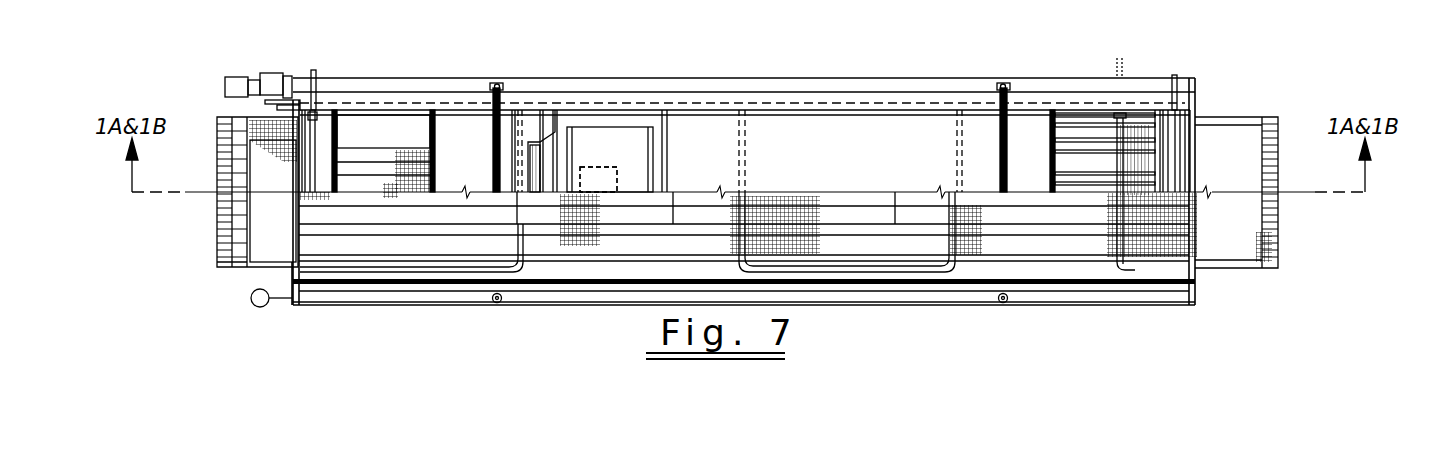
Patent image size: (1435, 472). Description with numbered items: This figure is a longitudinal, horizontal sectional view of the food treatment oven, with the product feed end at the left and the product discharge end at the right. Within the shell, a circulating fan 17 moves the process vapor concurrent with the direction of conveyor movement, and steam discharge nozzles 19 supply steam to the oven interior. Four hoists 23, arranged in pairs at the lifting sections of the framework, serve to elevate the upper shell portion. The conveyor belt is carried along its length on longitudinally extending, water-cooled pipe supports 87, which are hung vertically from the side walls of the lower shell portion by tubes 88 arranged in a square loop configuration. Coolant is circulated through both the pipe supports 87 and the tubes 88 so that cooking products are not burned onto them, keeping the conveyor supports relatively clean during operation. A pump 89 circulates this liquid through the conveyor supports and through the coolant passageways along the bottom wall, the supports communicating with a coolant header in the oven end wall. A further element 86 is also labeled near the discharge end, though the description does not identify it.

The circulating fan 17 is at (612, 164).
The steam discharge nozzles 19 is at (1128, 116).
The hoists 23 is at (499, 83).
The side wall 86 is at (1196, 216).
The pipe supports 87 is at (1040, 212).
The tubes 88 is at (742, 158).
The pump 89 is at (252, 302).